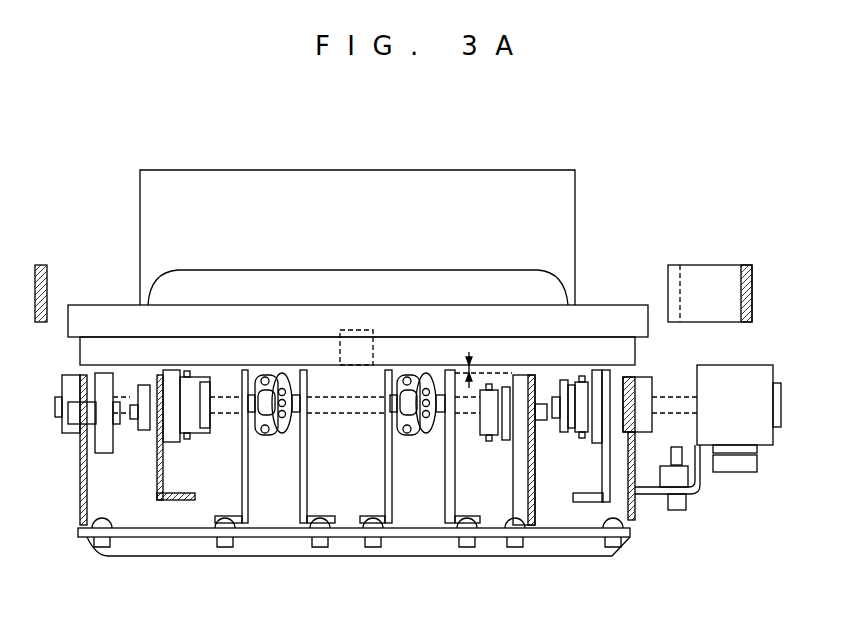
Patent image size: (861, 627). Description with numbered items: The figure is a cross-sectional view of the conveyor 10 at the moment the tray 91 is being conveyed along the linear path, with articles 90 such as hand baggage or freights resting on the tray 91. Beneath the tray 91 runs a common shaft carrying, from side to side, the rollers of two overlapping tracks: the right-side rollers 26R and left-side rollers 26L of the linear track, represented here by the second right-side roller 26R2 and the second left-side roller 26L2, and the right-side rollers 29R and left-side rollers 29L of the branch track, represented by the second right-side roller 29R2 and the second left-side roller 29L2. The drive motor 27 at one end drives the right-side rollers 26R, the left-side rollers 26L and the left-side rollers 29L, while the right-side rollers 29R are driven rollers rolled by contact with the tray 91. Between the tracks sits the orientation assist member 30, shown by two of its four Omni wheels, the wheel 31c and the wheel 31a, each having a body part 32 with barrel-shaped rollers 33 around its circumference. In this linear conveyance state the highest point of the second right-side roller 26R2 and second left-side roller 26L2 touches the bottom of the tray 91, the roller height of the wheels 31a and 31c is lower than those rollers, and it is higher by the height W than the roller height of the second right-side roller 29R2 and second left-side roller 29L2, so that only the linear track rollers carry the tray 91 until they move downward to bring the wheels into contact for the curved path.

The conveyor 10 is at (703, 212).
The articles 90 is at (537, 185).
The tray 91 is at (205, 268).
The height W is at (472, 371).
The drive motor 27 is at (762, 378).
The orientation assist member 30 is at (347, 355).
The wheel 31c is at (316, 228).
The wheel 31a is at (462, 228).
The body part 32 is at (284, 372).
The barrel-shaped roller 33 is at (266, 376).
The right-side rollers 29R is at (95, 492).
The second right-side roller 29R2 is at (102, 447).
The right-side rollers 26R is at (216, 491).
The second right-side roller 26R2 is at (172, 437).
The left-side rollers 29L is at (486, 493).
The second left-side roller 29L2 is at (522, 445).
The left-side rollers 26L is at (601, 491).
The second left-side roller 26L2 is at (600, 440).